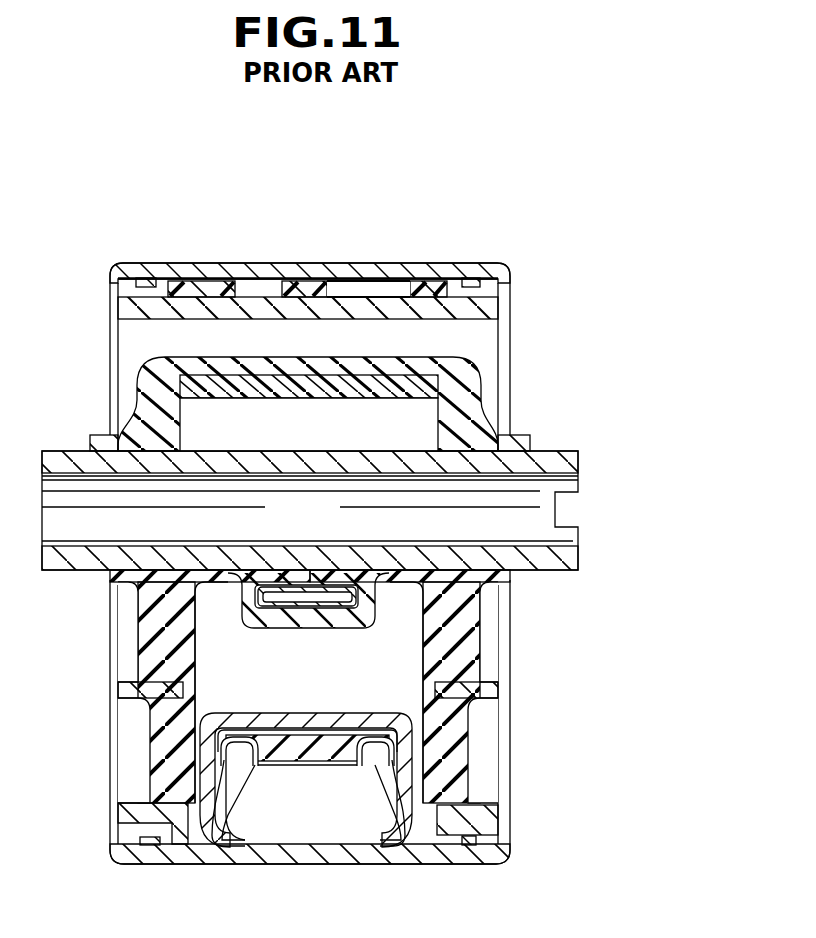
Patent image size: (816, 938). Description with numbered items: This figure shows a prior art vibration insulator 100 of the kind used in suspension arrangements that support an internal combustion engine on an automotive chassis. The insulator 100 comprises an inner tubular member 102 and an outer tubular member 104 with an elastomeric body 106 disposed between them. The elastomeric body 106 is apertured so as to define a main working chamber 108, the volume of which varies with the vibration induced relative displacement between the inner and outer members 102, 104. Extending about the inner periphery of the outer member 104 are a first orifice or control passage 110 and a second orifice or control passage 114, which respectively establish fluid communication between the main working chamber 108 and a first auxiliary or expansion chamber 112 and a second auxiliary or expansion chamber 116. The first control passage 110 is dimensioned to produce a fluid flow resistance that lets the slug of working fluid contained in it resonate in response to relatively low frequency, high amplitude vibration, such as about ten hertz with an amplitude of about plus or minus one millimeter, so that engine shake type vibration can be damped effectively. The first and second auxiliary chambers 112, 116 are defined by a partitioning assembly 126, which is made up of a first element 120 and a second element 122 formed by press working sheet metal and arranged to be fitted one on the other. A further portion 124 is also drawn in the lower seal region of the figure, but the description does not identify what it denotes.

The prior art seal assembly 100 is at (555, 253).
The shaft 102 is at (545, 451).
The housing cap 104 is at (433, 263).
The housing wall 106 is at (470, 621).
The chamber 108 is at (385, 656).
The spring washer 110 is at (257, 285).
The inner seal lip 112 is at (236, 772).
The slot 114 is at (363, 285).
The elastomeric seal body 116 is at (400, 728).
The seal case 120 is at (318, 713).
The lower seal lip 122 is at (222, 847).
The outer seal lip 124 is at (328, 770).
The passage 126 is at (240, 702).